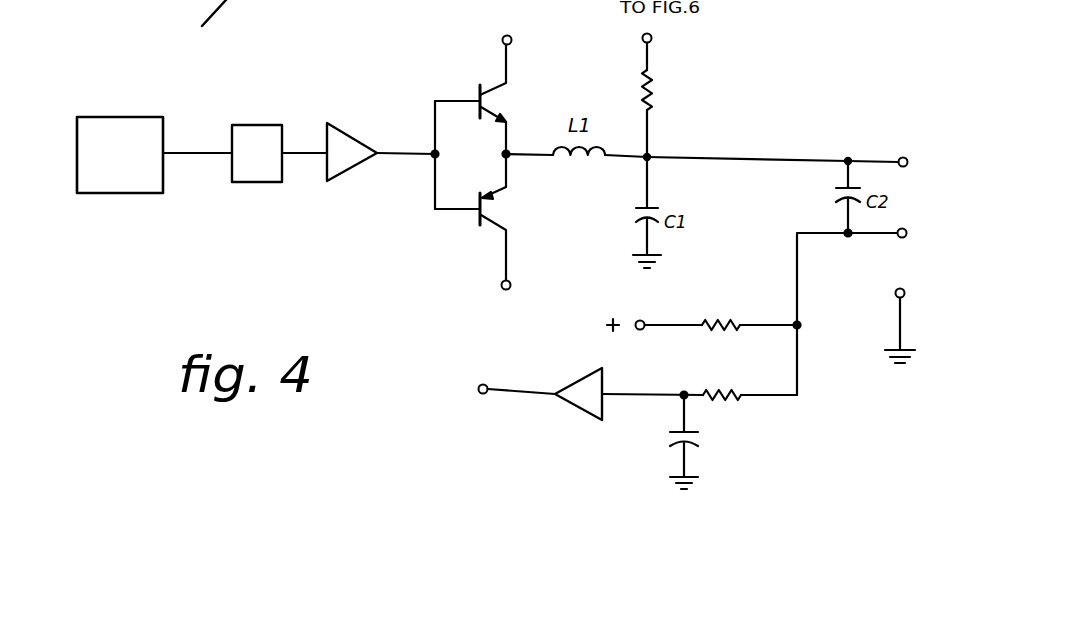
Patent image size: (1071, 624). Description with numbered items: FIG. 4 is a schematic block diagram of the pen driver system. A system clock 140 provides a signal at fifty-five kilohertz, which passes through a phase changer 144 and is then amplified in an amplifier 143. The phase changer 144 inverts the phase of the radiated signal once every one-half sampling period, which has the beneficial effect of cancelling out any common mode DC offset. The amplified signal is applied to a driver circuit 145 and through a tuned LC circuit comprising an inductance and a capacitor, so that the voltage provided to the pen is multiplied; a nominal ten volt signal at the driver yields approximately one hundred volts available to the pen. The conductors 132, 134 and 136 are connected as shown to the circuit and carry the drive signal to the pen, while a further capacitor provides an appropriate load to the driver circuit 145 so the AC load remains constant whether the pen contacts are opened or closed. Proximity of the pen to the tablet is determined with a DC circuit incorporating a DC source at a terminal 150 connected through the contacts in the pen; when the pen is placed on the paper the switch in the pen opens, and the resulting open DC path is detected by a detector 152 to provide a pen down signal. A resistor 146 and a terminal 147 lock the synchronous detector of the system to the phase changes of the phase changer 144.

The system clock 140 is at (163, 122).
The phase changer 144 is at (250, 183).
The amplifier 143 is at (336, 178).
The driver circuit 145 is at (485, 164).
The resistor 146 is at (655, 90).
The terminal 147 is at (652, 36).
The conductor 132 is at (908, 158).
The conductor 134 is at (888, 237).
The conductor 136 is at (902, 327).
The terminal 150 is at (640, 320).
The detector 152 is at (587, 415).